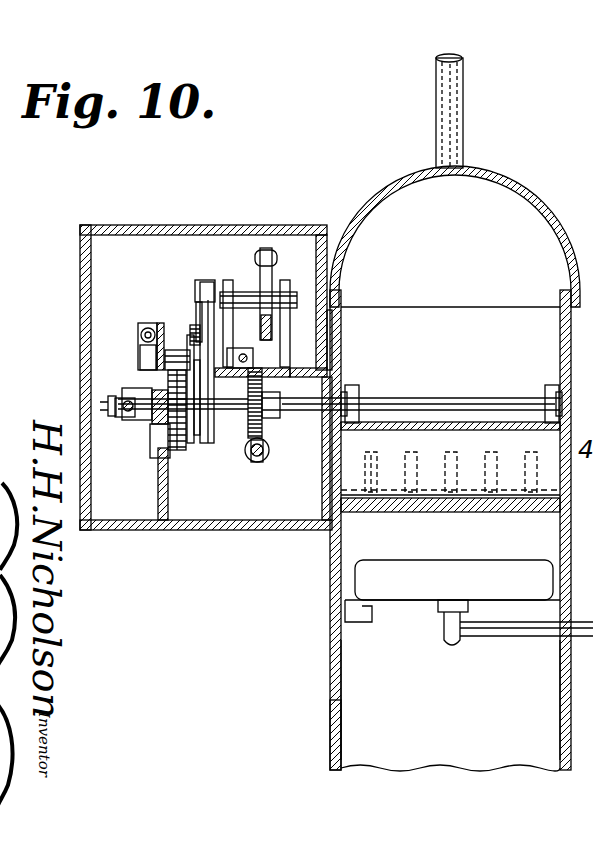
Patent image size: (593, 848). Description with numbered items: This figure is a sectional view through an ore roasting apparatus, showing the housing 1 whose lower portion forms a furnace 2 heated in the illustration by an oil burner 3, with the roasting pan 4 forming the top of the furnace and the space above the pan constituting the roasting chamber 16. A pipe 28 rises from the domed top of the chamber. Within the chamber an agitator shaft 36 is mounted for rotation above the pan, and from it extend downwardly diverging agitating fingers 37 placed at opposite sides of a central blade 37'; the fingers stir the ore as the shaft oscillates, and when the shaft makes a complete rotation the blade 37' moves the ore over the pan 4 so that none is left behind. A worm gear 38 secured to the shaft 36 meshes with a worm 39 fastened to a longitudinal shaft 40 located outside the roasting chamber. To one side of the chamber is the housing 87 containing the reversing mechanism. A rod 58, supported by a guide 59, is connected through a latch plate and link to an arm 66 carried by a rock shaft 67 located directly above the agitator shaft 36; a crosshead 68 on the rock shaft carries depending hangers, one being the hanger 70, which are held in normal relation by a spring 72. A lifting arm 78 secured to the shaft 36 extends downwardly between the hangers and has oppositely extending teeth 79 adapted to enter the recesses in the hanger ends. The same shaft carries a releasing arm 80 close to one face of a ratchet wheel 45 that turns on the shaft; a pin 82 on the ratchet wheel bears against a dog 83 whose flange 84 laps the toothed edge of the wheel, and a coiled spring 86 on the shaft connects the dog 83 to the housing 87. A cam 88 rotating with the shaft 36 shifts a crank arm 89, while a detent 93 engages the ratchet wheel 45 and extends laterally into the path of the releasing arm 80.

The housing 1 is at (340, 732).
The furnace 2 is at (365, 670).
The oil burner 3 is at (372, 583).
The roasting pan 4 is at (425, 505).
The roasting chamber 16 is at (455, 468).
The vent pipe 28 is at (452, 120).
The agitator shaft 36 is at (452, 398).
The agitating finger 37 is at (450, 504).
The central blade 37' is at (383, 505).
The worm gear 38 is at (262, 429).
The worm 39 is at (256, 462).
The longitudinal shaft 40 is at (269, 452).
The ratchet wheel 45 is at (162, 320).
The rod 58 is at (325, 362).
The guide 59 is at (232, 350).
The arm 66 is at (270, 273).
The rock shaft 67 is at (237, 297).
The crosshead 68 is at (193, 283).
The hanger 70 is at (205, 385).
The spring 72 is at (195, 322).
The lifting arm 78 is at (214, 433).
The tooth 79 is at (205, 443).
The releasing arm 80 is at (190, 443).
The pin 82 is at (125, 380).
The dog 83 is at (175, 428).
The flange 84 is at (162, 456).
The coiled spring 86 is at (150, 420).
The housing 87 is at (168, 530).
The cam 88 is at (122, 386).
The crank arm 89 is at (143, 353).
The detent 93 is at (187, 355).